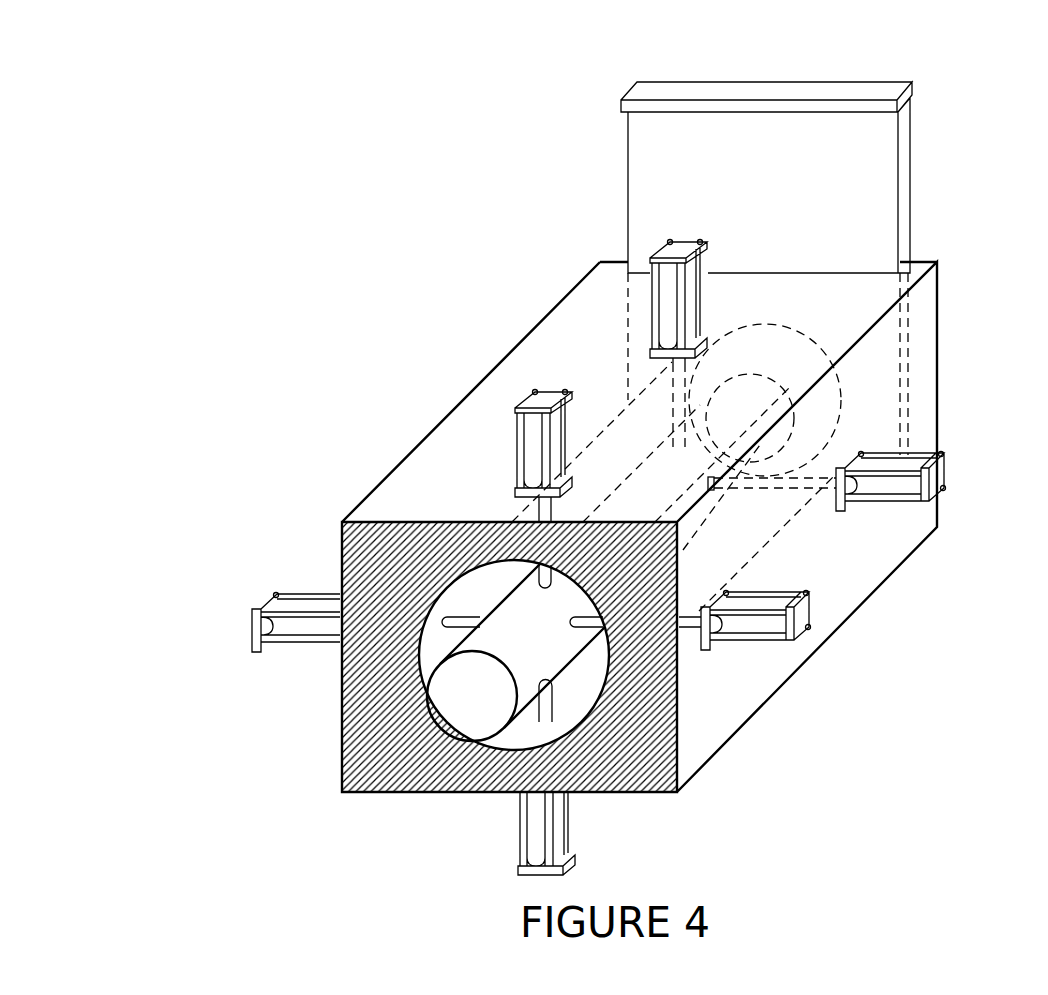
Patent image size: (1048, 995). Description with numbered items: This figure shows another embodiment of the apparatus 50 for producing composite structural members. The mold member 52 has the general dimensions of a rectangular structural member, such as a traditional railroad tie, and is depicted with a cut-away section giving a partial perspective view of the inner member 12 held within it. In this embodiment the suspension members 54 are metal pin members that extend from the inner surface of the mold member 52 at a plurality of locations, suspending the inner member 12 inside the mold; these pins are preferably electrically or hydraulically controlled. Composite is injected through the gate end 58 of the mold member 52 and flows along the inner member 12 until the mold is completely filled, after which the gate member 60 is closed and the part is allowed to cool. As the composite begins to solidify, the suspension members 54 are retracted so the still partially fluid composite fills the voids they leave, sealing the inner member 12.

The inner member 12 is at (457, 700).
The apparatus for manufacturing the load bearing structure 50 is at (370, 427).
The mold member 52 is at (597, 345).
The suspension members 54 is at (783, 477).
The gate end 58 is at (587, 228).
The gate member 60 is at (880, 138).